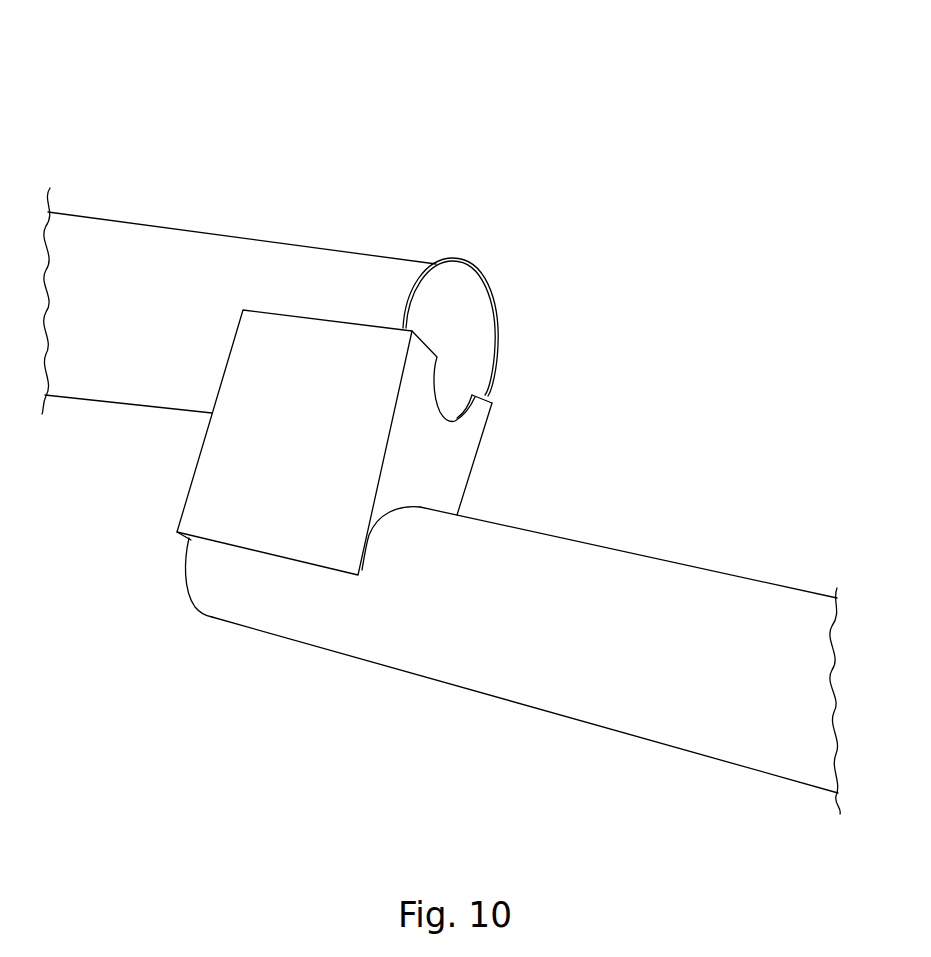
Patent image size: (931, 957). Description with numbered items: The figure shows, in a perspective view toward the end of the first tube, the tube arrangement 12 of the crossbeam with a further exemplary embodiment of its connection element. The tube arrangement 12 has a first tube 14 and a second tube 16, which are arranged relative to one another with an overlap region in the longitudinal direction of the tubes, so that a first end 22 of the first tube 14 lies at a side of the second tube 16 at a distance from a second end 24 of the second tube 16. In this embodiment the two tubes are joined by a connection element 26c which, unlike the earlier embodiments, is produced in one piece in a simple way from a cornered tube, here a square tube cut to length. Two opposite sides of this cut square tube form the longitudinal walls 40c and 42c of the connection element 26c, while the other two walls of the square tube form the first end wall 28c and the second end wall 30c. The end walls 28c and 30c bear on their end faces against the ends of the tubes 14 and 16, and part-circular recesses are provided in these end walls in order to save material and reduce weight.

The tube arrangement 12 is at (621, 190).
The first tube 14 is at (147, 238).
The second tube 16 is at (487, 675).
The first end 22 is at (438, 261).
The second end 24 is at (197, 574).
The connection element 26c is at (176, 470).
The first end wall 28c is at (452, 467).
The second end wall 30c is at (176, 534).
The longitudinal wall 40c is at (303, 357).
The longitudinal wall 42c is at (490, 427).